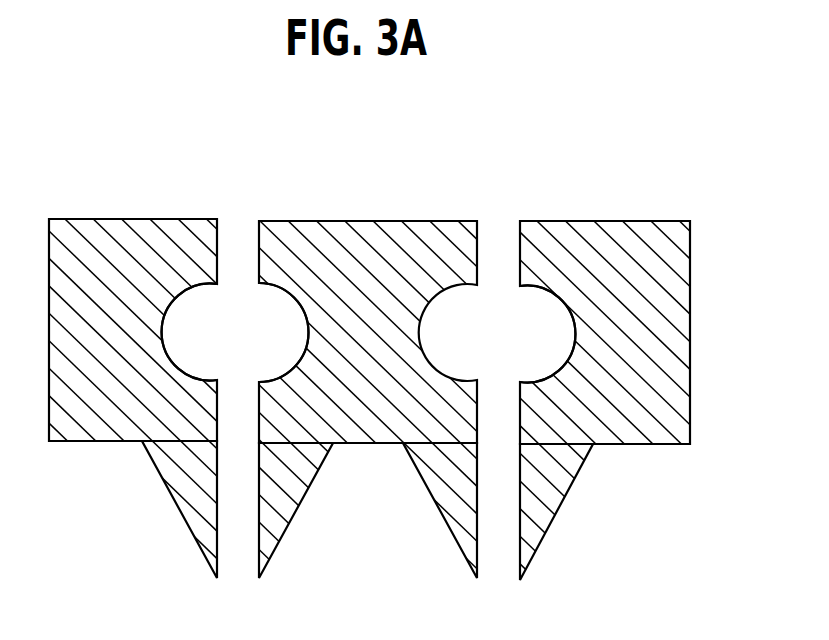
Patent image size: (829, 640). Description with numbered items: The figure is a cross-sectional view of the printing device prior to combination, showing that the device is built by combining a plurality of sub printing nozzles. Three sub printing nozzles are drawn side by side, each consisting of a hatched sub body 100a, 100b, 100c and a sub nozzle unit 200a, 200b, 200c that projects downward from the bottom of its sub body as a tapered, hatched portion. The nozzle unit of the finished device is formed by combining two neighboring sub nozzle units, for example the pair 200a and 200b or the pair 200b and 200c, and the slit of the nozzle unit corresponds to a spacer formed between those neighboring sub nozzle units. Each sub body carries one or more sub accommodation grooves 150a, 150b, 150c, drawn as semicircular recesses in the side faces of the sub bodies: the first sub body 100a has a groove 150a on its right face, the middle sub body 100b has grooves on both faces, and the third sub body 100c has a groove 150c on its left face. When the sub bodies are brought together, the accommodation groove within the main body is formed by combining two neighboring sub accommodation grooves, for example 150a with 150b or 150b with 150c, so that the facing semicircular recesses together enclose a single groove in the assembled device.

The sub body 100a is at (92, 242).
The sub body 100b is at (373, 243).
The sub body 100c is at (603, 247).
The sub accommodation groove 150a is at (195, 309).
The sub accommodation groove 150b is at (282, 313).
The sub accommodation groove 150c is at (530, 327).
The sub nozzle unit 200a is at (187, 502).
The sub nozzle unit 200b is at (445, 500).
The sub nozzle unit 200c is at (548, 504).